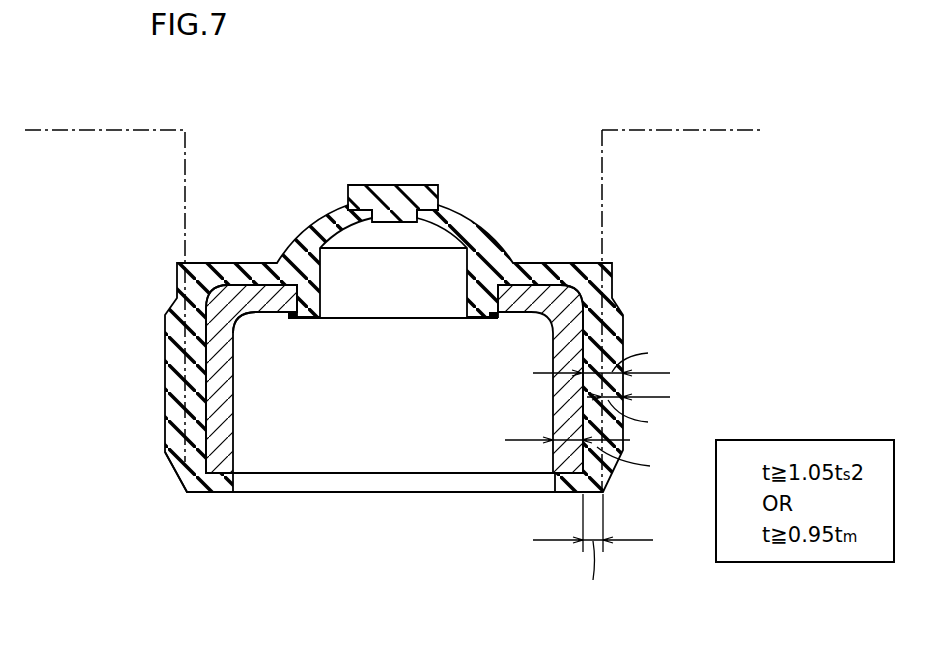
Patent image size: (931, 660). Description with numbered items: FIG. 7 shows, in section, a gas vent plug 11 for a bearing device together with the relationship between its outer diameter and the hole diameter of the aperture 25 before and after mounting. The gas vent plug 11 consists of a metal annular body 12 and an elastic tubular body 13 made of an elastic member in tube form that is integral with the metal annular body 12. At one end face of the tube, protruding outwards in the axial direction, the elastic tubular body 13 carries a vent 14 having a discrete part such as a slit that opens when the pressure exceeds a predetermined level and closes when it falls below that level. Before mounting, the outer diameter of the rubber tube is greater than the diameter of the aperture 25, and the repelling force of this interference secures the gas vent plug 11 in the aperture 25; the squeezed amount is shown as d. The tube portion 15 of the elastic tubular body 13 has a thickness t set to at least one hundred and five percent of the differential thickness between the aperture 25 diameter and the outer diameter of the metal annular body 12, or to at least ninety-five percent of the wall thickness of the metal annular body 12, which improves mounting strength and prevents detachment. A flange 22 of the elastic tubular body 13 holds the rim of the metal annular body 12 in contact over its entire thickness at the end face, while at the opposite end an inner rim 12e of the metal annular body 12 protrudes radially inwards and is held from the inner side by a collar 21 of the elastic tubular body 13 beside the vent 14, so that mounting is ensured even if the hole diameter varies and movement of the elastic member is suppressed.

The gas vent plug 11 is at (639, 75).
The metal annular body 12 is at (213, 417).
The inner rim 12e is at (262, 303).
The elastic tubular body 13 is at (187, 382).
The vent 14 is at (402, 198).
The tube portion 15 is at (682, 302).
The collar 21 is at (492, 292).
The flange 22 is at (205, 494).
The aperture 25 is at (187, 187).